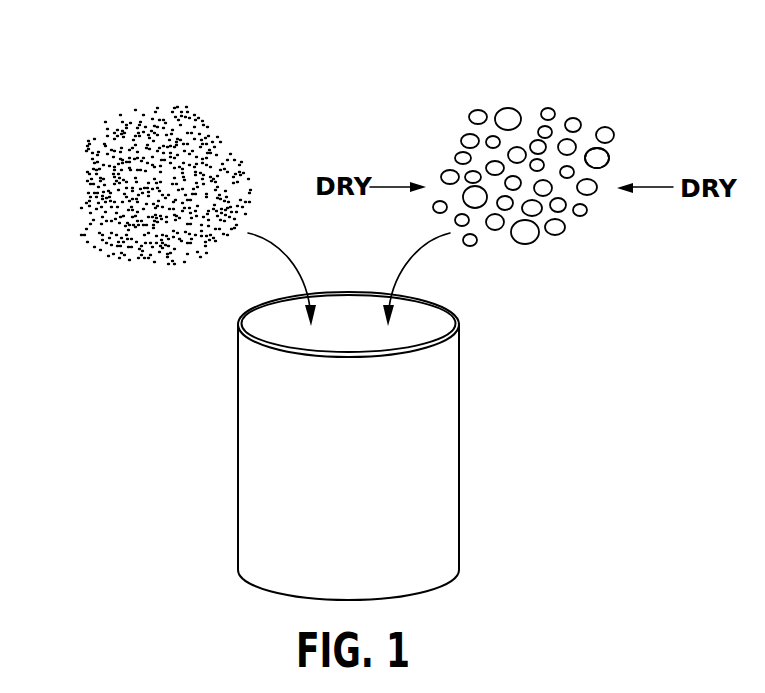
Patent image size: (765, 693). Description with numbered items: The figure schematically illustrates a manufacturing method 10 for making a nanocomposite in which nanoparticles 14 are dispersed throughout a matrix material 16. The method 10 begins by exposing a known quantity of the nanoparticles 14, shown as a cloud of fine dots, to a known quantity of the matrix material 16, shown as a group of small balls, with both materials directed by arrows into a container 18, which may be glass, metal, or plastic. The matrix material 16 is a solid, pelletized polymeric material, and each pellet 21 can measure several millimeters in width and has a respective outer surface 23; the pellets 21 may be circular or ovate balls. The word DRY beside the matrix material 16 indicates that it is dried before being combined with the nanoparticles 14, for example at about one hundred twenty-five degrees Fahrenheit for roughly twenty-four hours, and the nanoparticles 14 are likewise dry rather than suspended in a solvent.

The manufacturing method 10 is at (142, 74).
The nanoparticles 14 is at (70, 113).
The matrix material 16 is at (611, 213).
The container 18 is at (460, 444).
The pellet 21 is at (597, 157).
The outer surface 23 is at (611, 160).